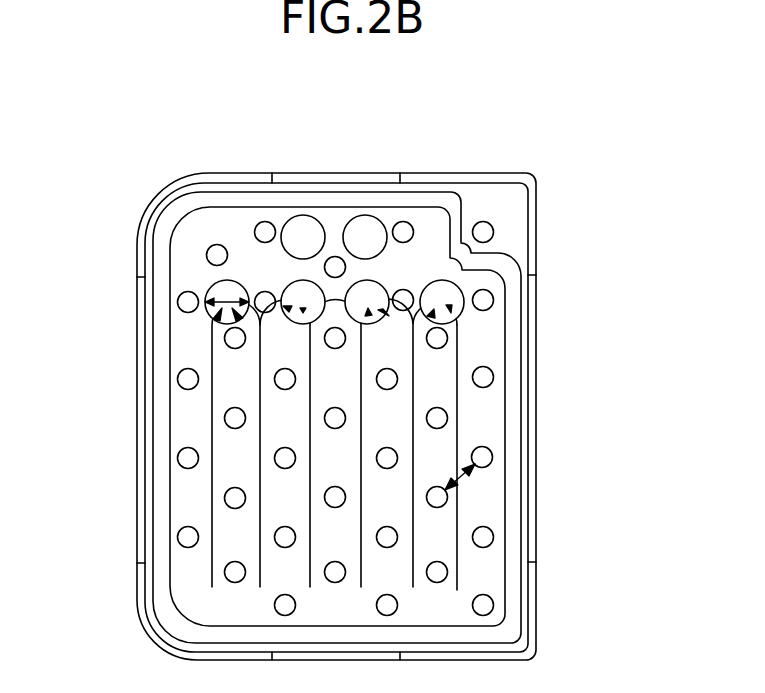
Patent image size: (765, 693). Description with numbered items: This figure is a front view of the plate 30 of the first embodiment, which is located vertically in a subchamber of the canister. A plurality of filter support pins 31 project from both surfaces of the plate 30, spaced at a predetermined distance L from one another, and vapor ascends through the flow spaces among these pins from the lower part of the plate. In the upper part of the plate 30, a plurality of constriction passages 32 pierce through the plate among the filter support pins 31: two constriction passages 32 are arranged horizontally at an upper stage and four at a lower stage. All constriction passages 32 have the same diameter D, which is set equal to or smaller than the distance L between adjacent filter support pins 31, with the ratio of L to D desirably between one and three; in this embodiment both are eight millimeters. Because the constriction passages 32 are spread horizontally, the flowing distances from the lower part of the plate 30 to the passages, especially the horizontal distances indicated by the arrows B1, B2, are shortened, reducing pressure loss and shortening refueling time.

The plate 30 is at (482, 340).
The filter support pins 31 is at (485, 455).
The constriction passages 32 is at (298, 290).
The diameter D is at (220, 300).
The distance L is at (455, 482).
The horizontal flowing distance B1 is at (457, 560).
The horizontal flowing distance B2 is at (210, 562).